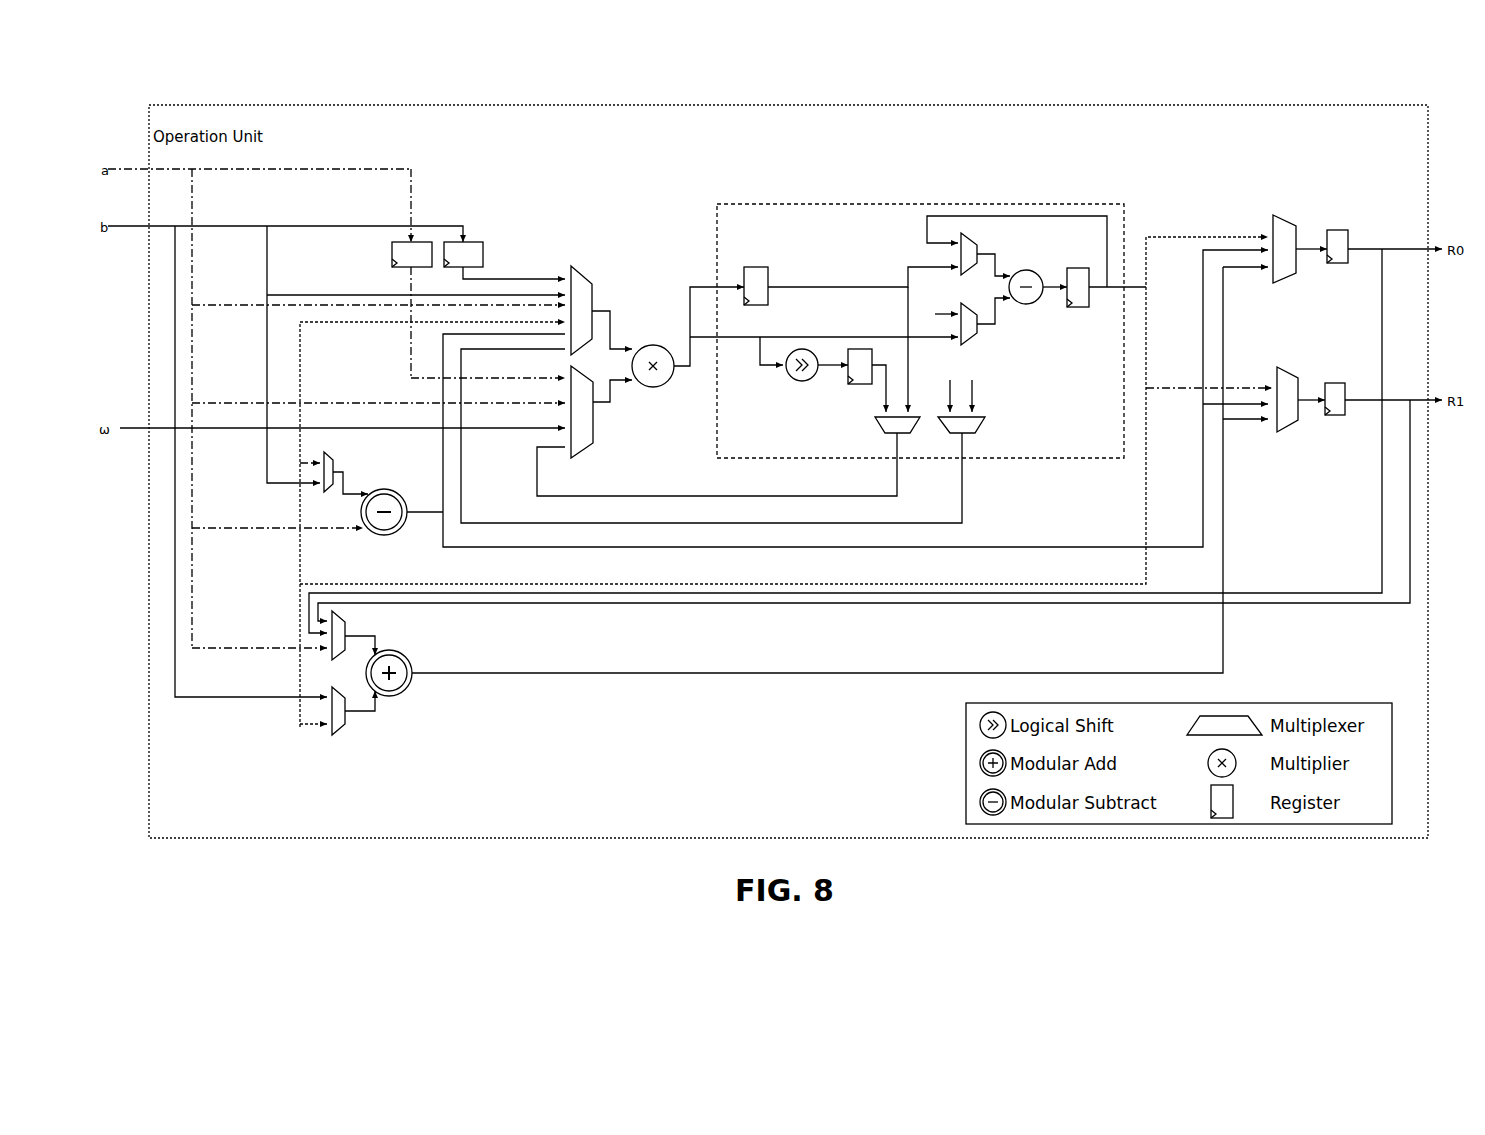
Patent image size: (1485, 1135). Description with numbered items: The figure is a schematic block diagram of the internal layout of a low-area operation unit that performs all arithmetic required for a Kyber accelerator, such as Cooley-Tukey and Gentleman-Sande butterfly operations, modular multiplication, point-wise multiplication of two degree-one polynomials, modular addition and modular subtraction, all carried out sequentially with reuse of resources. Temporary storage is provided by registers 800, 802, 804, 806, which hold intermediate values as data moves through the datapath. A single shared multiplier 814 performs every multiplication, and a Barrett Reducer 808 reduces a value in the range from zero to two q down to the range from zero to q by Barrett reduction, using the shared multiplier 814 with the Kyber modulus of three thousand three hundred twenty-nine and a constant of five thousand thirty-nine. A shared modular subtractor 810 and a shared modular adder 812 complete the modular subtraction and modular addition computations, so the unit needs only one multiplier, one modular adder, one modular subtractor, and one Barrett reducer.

The register 800 is at (392, 256).
The register 802 is at (484, 254).
The register 804 is at (1338, 229).
The register 806 is at (1335, 382).
The Barrett Reducer 808 is at (963, 204).
The shared modular subtractor 810 is at (383, 489).
The shared modular adder 812 is at (403, 657).
The shared multiplier 814 is at (655, 345).